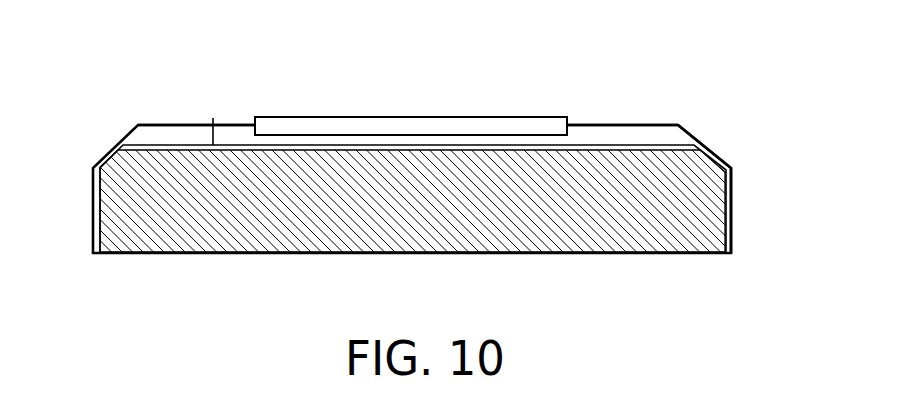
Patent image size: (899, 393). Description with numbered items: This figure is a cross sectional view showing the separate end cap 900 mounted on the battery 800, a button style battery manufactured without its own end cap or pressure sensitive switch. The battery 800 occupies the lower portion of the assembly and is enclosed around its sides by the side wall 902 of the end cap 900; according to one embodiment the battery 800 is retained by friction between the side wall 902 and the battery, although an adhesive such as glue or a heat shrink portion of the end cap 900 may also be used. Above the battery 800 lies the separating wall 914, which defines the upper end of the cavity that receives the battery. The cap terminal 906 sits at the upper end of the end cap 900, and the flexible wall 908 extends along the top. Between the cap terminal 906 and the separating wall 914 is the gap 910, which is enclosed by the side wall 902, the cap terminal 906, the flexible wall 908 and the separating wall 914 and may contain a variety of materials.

The battery 800 is at (203, 255).
The end cap 900 is at (120, 139).
The side wall 902 is at (732, 223).
The cap terminal 906 is at (362, 117).
The flexible wall 908 is at (634, 125).
The gap 910 is at (171, 126).
The separating wall 914 is at (213, 118).